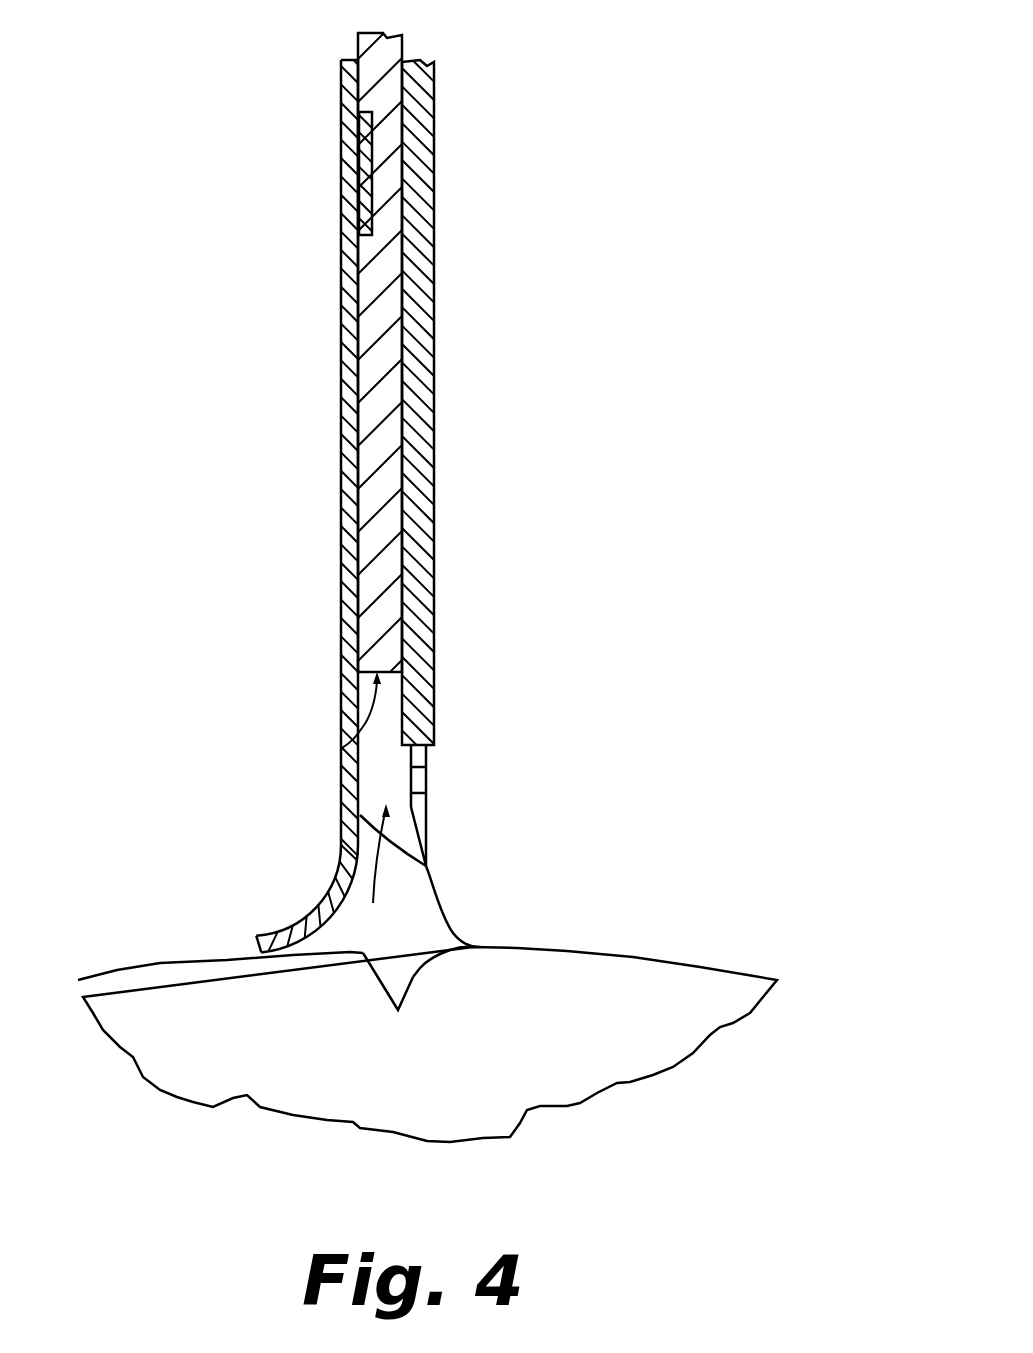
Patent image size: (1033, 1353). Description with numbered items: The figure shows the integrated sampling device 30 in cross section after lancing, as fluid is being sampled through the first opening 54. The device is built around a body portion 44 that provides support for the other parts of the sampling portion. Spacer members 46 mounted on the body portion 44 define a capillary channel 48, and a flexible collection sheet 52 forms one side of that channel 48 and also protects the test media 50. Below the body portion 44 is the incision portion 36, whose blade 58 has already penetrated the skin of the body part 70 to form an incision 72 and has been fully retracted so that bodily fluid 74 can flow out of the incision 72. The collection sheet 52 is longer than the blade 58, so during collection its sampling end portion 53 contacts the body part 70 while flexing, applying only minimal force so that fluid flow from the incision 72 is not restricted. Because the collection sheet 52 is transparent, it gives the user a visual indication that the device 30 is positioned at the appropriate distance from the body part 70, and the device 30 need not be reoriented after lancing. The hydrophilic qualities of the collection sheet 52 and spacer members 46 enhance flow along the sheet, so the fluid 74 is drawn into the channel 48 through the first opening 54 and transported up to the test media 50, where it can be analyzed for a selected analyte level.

The integrated sampling device 30 is at (645, 92).
The incision portion 36 is at (427, 777).
The body portion 44 is at (435, 510).
The spacer members 46 is at (385, 322).
The capillary channel 48 is at (342, 748).
The test media 50 is at (372, 147).
The collection sheet 52 is at (341, 402).
The sampling end portion 53 is at (257, 937).
The first opening 54 is at (381, 878).
The blade 58 is at (420, 820).
The body part 70 is at (664, 957).
The incision 72 is at (381, 988).
The bodily fluid 74 is at (418, 903).